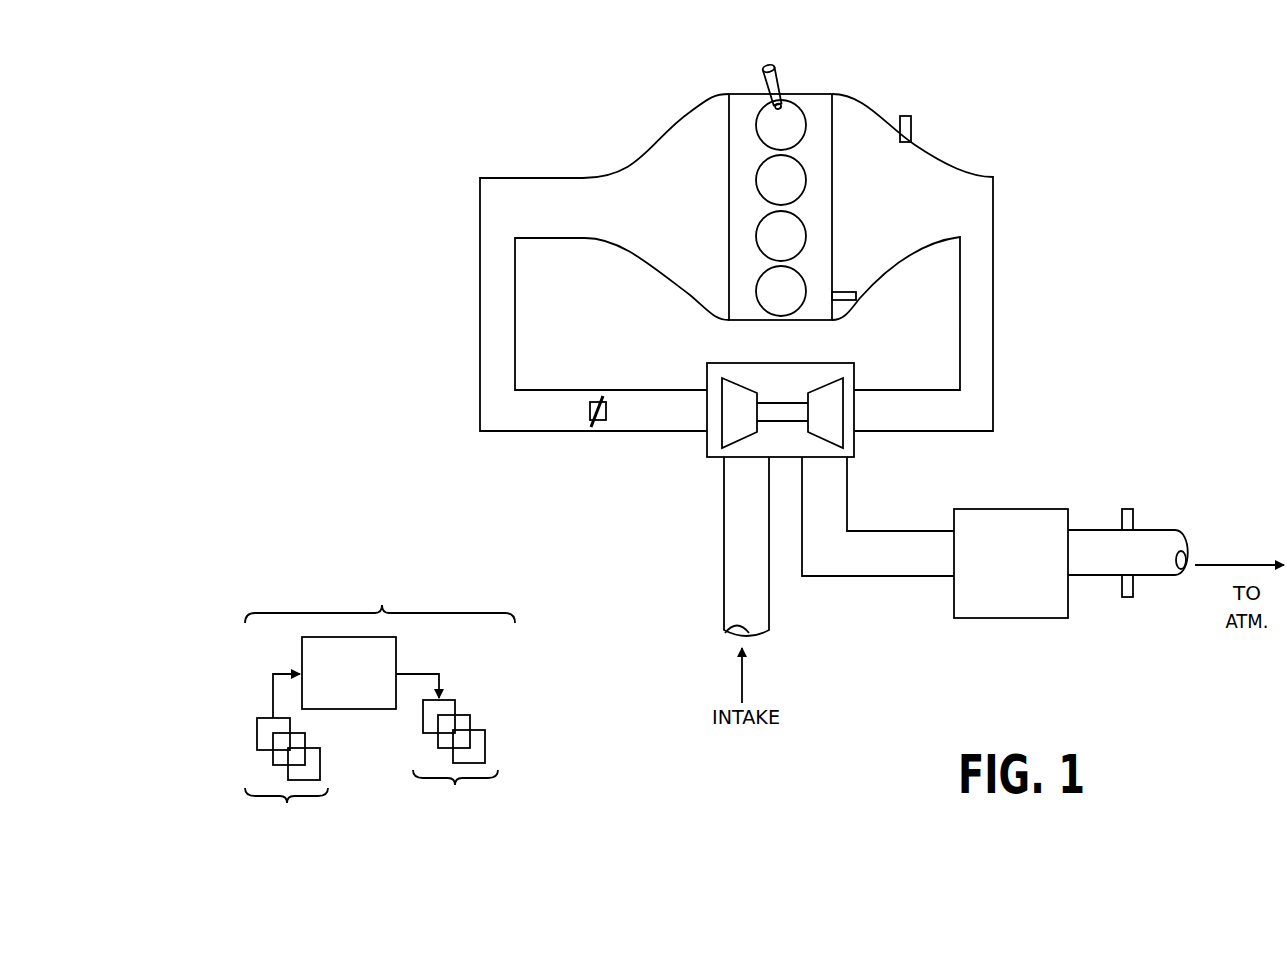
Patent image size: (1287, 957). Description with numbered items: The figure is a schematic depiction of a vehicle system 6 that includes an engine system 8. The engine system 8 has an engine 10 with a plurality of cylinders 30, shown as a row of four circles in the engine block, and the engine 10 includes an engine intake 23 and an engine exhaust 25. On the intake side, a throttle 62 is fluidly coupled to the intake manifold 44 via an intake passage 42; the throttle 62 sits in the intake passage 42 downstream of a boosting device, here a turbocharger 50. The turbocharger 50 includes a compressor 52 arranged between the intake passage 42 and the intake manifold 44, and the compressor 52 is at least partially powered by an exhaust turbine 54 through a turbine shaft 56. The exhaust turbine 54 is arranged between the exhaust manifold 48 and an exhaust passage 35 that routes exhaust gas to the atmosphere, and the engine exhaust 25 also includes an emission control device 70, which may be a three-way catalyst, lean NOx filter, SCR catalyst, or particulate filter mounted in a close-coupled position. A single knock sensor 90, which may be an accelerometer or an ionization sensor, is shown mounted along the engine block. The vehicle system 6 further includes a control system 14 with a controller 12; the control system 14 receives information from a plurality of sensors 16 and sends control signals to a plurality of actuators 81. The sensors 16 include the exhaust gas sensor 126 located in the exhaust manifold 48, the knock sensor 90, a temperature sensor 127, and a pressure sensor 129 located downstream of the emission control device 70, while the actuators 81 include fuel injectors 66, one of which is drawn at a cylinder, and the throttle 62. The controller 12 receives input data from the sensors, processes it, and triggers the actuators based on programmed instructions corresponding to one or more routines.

The vehicle system 6 is at (217, 122).
The engine system 8 is at (1003, 103).
The engine 10 is at (832, 189).
The controller 12 is at (349, 673).
The control system 14 is at (380, 593).
The sensors 16 is at (286, 763).
The engine intake 23 is at (655, 543).
The engine exhaust 25 is at (1015, 323).
The cylinders 30 is at (802, 117).
The exhaust passage 35 is at (1143, 530).
The intake passage 42 is at (724, 577).
The intake manifold 44 is at (604, 262).
The exhaust manifold 48 is at (912, 262).
The turbocharger 50 is at (778, 363).
The compressor 52 is at (721, 400).
The exhaust turbine 54 is at (845, 400).
The turbine shaft 56 is at (767, 405).
The throttle 62 is at (606, 414).
The fuel injectors 66 is at (769, 62).
The emission control device 70 is at (990, 509).
The actuators 81 is at (447, 754).
The knock sensor 90 is at (857, 296).
The exhaust gas sensor 126 is at (911, 133).
The temperature sensor 127 is at (1134, 586).
The pressure sensor 129 is at (1126, 509).